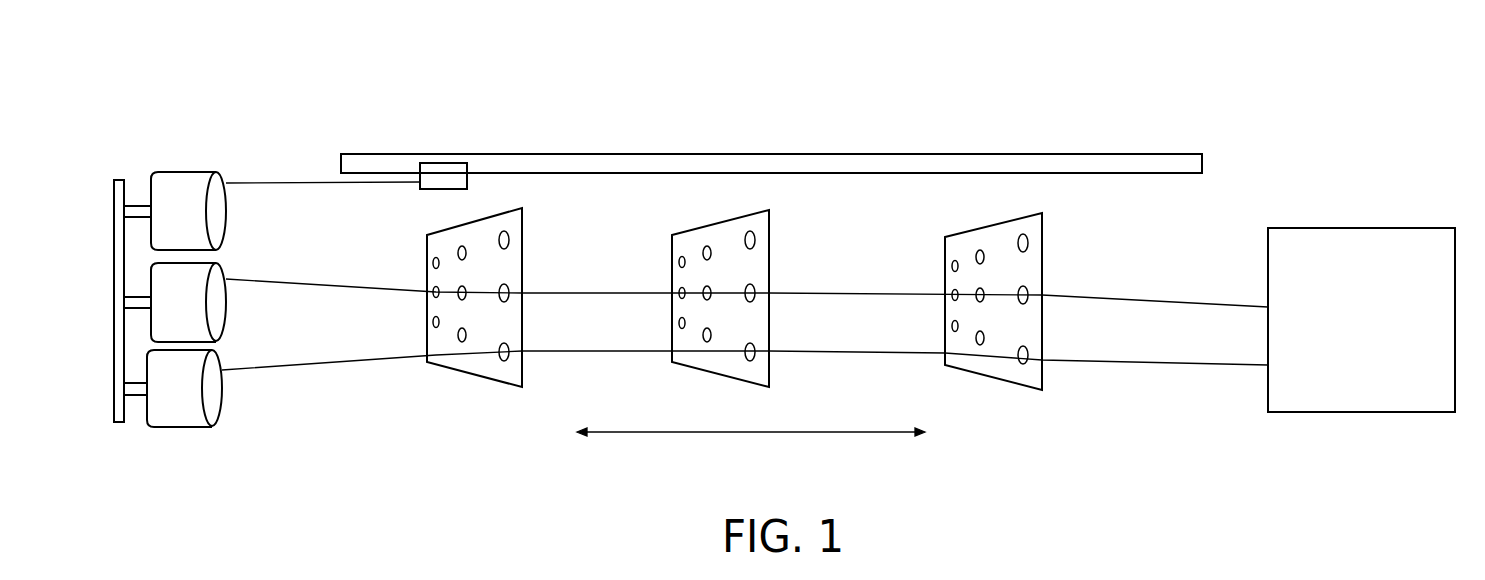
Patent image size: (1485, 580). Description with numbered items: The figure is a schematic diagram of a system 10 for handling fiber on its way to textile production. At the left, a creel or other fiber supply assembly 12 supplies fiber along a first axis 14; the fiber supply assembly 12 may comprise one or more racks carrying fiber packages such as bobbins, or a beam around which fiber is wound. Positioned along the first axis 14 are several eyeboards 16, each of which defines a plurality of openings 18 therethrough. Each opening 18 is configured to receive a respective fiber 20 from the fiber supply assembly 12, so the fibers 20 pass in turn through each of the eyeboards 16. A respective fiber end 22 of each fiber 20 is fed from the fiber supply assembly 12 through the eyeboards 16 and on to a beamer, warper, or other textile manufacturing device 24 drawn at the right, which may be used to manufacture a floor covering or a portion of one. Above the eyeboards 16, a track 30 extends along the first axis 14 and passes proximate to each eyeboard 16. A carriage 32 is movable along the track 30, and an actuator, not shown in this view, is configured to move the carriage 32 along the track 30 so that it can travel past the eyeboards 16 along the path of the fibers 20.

The system 10 is at (245, 100).
The fiber supply assembly 12 is at (259, 421).
The first axis 14 is at (667, 433).
The eyeboard 16 is at (691, 291).
The openings 18 is at (459, 333).
The fiber 20 is at (282, 184).
The fiber end 22 is at (413, 182).
The textile manufacturing device 24 is at (1361, 320).
The track 30 is at (657, 162).
The carriage 32 is at (448, 170).